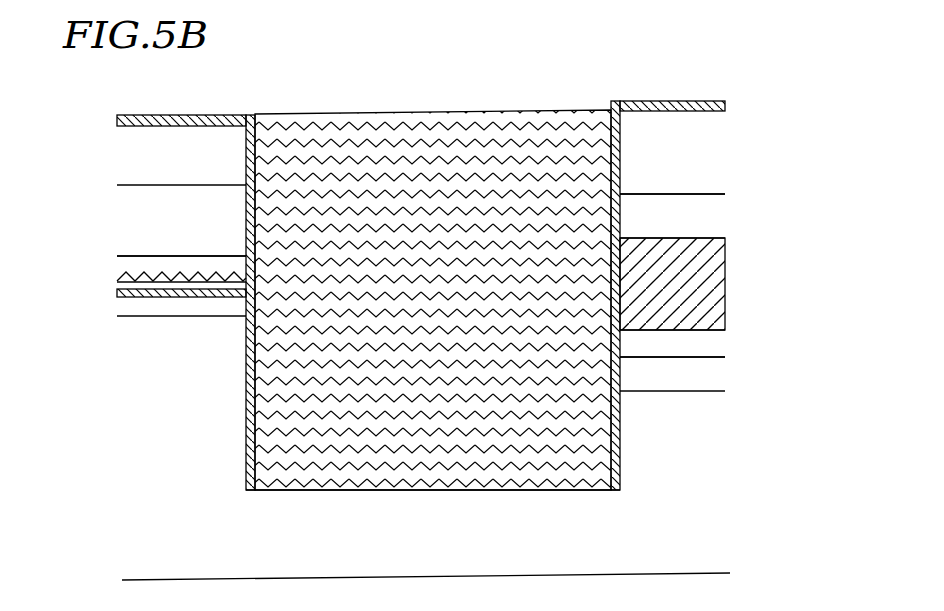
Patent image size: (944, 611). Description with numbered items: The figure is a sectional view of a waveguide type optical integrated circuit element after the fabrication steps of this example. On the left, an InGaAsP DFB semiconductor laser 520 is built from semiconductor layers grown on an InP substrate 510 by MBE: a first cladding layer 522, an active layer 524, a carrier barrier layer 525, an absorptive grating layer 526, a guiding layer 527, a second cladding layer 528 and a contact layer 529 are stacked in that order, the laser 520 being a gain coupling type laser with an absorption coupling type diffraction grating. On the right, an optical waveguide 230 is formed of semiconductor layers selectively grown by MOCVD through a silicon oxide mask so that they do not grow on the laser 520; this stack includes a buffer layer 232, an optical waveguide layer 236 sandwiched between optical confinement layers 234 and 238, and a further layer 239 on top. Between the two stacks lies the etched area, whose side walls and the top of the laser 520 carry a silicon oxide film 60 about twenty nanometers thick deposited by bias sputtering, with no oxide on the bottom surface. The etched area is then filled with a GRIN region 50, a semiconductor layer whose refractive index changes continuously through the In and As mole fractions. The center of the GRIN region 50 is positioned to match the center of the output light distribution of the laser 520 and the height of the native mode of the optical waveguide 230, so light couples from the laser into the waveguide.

The GRIN region 50 is at (370, 157).
The silicon oxide film 60 is at (256, 130).
The InP substrate 510 is at (262, 542).
The InGaAsP DFB semiconductor laser 520 is at (215, 98).
The first cladding layer 522 is at (135, 322).
The active layer 524 is at (145, 310).
The carrier barrier layer 525 is at (120, 290).
The absorptive grating layer 526 is at (120, 275).
The guiding layer 527 is at (130, 258).
The second cladding layer 528 is at (145, 218).
The contact layer 529 is at (147, 155).
The optical waveguide 230 is at (693, 81).
The buffer layer 232 is at (712, 373).
The optical confinement layer 234 is at (712, 345).
The optical waveguide layer 236 is at (703, 272).
The optical confinement layer 238 is at (710, 218).
The layer 239 is at (703, 163).